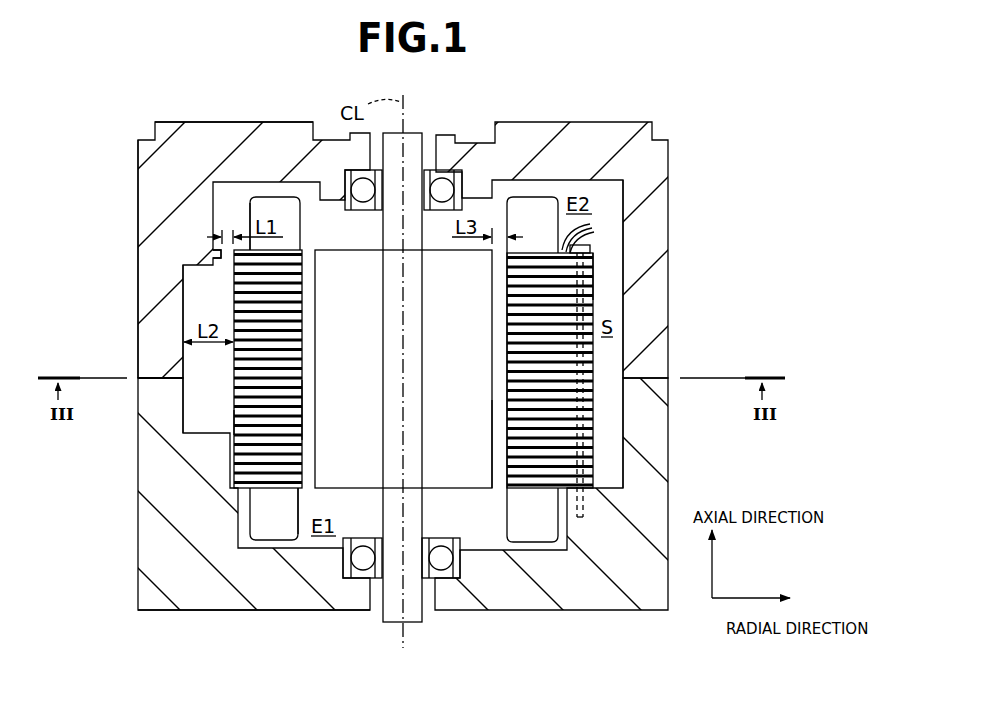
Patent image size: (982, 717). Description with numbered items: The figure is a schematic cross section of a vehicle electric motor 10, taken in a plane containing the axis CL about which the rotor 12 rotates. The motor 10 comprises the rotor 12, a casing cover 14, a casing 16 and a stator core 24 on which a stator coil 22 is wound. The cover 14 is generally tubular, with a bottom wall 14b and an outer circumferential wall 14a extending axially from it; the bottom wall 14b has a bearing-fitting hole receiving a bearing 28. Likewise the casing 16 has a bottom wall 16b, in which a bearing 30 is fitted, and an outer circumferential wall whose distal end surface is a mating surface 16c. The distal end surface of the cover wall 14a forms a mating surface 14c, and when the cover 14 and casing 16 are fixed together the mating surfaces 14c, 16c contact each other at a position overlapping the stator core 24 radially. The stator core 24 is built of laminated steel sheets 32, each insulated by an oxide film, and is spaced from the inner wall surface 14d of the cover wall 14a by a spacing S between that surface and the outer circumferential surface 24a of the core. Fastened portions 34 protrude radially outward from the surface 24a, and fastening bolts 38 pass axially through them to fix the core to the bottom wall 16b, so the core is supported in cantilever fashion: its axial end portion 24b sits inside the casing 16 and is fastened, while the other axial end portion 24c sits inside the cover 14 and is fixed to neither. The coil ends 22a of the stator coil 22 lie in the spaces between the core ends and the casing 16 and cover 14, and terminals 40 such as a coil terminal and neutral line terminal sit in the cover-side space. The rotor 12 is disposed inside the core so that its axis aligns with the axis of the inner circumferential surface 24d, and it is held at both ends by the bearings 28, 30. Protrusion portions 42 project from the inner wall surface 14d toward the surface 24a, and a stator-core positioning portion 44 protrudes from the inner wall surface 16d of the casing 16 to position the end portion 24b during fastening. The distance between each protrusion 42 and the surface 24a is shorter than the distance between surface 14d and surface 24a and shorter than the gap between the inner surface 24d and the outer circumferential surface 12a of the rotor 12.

The vehicle electric motor 10 is at (456, 359).
The rotor 12 is at (352, 244).
The outer circumferential surface of the rotor 12a is at (493, 482).
The casing cover 14 is at (137, 120).
The outer circumferential wall of the cover 14a is at (145, 205).
The bottom wall of the cover 14b is at (228, 134).
The mating surface of the cover 14c is at (145, 388).
The inner wall surface of the cover 14d is at (185, 306).
The casing 16 is at (134, 614).
The bottom wall of the casing 16b is at (212, 603).
The mating surface of the casing 16c is at (178, 372).
The inner wall surface of the casing 16d is at (186, 429).
The stator coil 22 is at (545, 346).
The coil ends 22a is at (518, 200).
The stator core 24 is at (430, 350).
The outer circumferential surface of the stator core 24a is at (232, 358).
The axial end portion of the stator core 24b is at (260, 505).
The other axial end portion of the stator core 24c is at (286, 246).
The inner circumferential surface of the stator core 24d is at (302, 478).
The bearing 28 is at (432, 176).
The bearing 30 is at (353, 566).
The steel sheets 32 is at (292, 410).
The fastened portions 34 is at (588, 272).
The fastening bolts 38 is at (583, 366).
The terminals 40 is at (589, 236).
The protrusion portions 42 is at (221, 260).
The stator-core positioning portion 44 is at (238, 422).